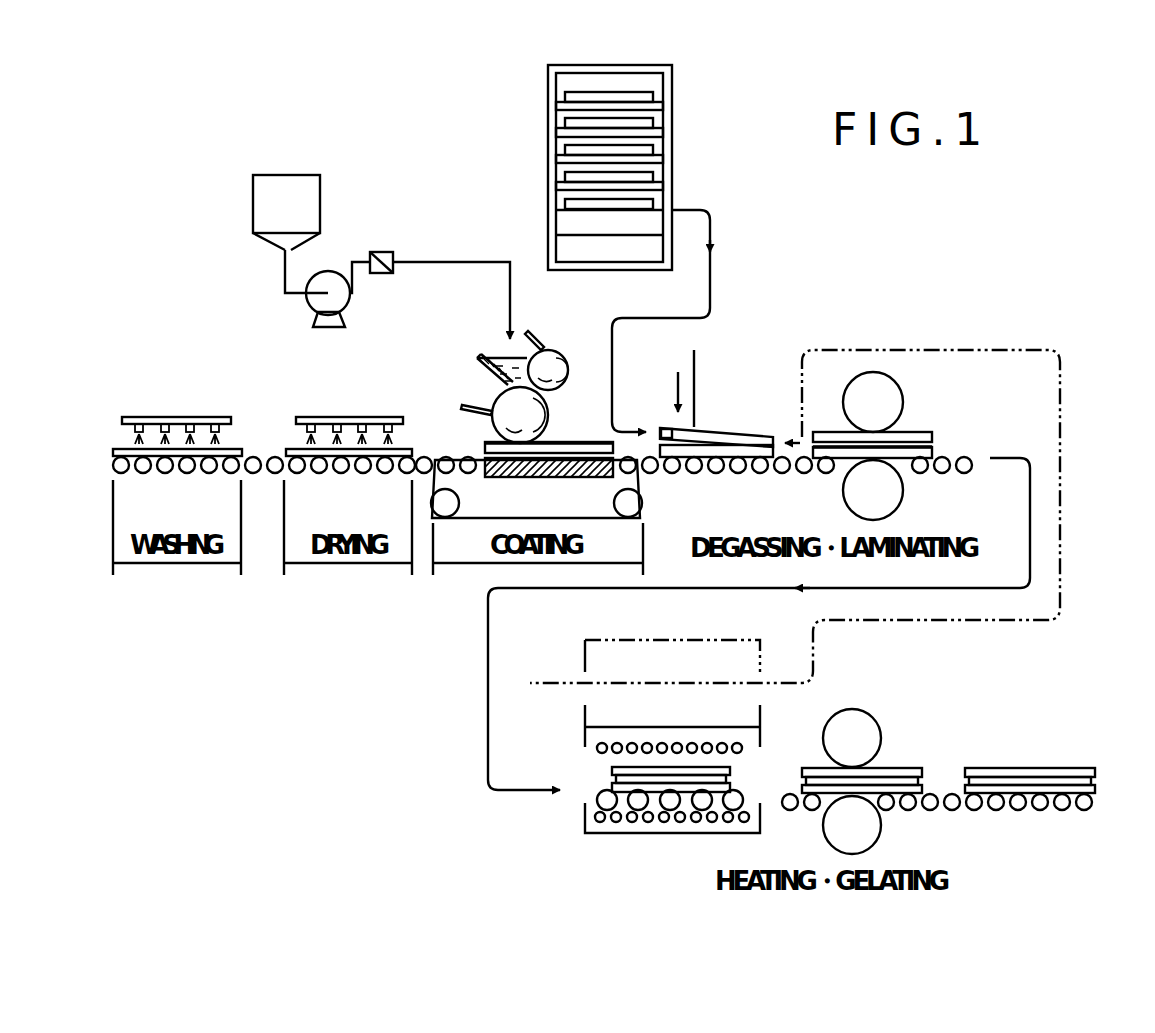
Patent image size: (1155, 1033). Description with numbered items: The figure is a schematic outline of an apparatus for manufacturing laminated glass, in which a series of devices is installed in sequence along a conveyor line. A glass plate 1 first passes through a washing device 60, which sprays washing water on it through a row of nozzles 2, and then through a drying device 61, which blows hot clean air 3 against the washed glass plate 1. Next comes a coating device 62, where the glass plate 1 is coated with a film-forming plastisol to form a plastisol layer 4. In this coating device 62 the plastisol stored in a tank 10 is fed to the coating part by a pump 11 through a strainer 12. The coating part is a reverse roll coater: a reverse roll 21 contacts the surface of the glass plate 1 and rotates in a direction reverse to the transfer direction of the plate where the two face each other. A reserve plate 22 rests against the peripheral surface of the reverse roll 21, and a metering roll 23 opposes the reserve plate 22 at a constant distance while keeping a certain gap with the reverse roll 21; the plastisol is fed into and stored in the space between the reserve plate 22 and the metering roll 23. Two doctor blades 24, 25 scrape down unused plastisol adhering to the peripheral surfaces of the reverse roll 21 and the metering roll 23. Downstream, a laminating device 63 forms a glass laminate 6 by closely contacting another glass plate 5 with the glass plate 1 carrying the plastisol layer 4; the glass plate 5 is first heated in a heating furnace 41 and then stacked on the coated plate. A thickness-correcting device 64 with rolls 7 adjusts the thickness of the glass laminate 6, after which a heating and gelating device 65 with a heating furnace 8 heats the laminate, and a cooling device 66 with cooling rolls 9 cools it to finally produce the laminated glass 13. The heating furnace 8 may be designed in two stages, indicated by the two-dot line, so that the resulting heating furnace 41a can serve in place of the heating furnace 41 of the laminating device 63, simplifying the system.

The glass plate 1 is at (113, 450).
The washing nozzles 2 is at (220, 417).
The hot clean air 3 is at (380, 417).
The plastisol layer 4 is at (574, 441).
The glass plate 5 is at (640, 113).
The glass laminate 6 is at (941, 448).
The rolls 7 is at (903, 406).
The heating furnace 8 is at (610, 727).
The cooling rolls 9 is at (880, 735).
The tank 10 is at (275, 180).
The pump 11 is at (351, 300).
The strainer 12 is at (380, 252).
The laminated glass 13 is at (1045, 768).
The reverse roll 21 is at (551, 412).
The reserve plate 22 is at (478, 358).
The metering roll 23 is at (561, 355).
The doctor blade 24 is at (462, 407).
The doctor blade 25 is at (531, 333).
The heating furnace 41 is at (672, 166).
The heating furnace 41a is at (640, 640).
The washing device 60 is at (170, 388).
The drying device 61 is at (337, 395).
The coating device 62 is at (530, 308).
The laminating device 63 is at (745, 384).
The thickness-correcting device 64 is at (901, 438).
The heating and gelating device 65 is at (582, 760).
The cooling device 66 is at (862, 749).